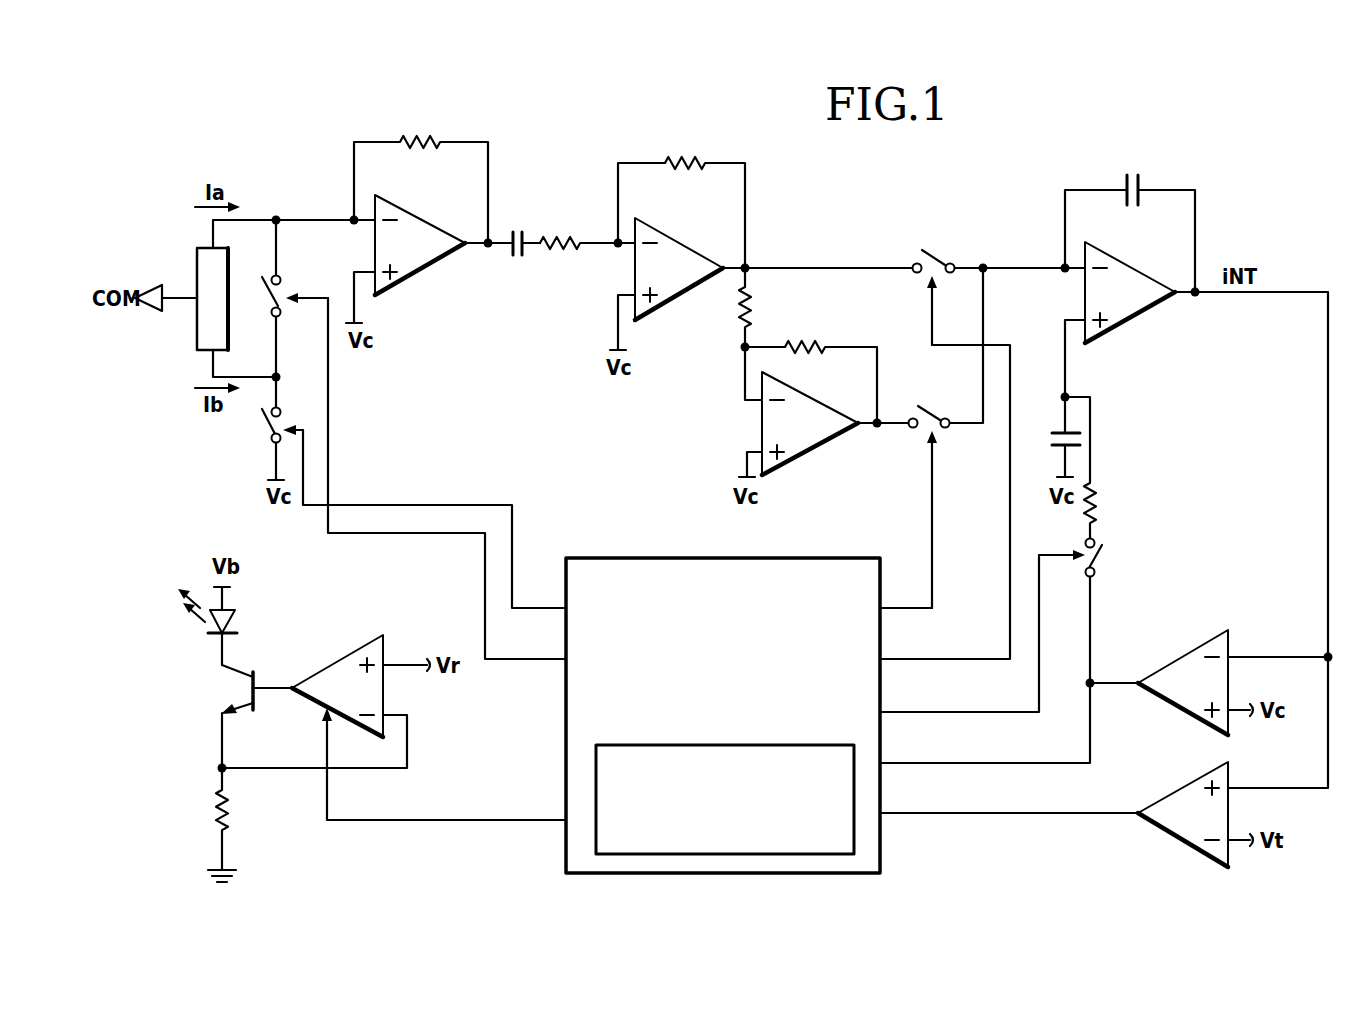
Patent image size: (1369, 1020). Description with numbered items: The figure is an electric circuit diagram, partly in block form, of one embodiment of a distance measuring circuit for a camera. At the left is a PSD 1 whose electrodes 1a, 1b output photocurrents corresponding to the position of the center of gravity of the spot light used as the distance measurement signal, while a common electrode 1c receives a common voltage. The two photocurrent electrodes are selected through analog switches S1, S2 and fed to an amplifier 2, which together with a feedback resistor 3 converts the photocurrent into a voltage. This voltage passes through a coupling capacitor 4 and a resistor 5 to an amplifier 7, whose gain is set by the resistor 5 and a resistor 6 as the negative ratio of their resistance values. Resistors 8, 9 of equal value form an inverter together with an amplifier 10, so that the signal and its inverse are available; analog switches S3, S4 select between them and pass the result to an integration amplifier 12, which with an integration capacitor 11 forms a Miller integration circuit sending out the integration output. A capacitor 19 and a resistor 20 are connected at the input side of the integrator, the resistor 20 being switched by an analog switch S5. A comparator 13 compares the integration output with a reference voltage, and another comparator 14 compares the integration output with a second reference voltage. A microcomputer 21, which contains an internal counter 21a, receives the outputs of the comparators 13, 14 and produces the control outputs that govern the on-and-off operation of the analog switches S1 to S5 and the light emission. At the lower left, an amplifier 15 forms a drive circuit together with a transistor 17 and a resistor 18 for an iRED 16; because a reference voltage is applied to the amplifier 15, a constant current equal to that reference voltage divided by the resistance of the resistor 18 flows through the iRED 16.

The PSD 1 is at (197, 270).
The electrode 1a is at (213, 248).
The electrode 1b is at (213, 352).
The common electrode 1c is at (197, 302).
The amplifier 2 is at (422, 278).
The feedback resistor 3 is at (417, 144).
The coupling capacitor 4 is at (516, 230).
The resistor 5 is at (560, 238).
The resistor 6 is at (688, 165).
The amplifier 7 is at (670, 303).
The resistor 8 is at (752, 318).
The resistor 9 is at (815, 347).
The amplifier 10 is at (826, 445).
The integration capacitor 11 is at (1138, 183).
The integration amplifier 12 is at (1132, 268).
The comparator 13 is at (1176, 792).
The comparator 14 is at (1178, 660).
The amplifier 15 is at (330, 660).
The iRED 16 is at (235, 618).
The transistor 17 is at (226, 690).
The resistor 18 is at (225, 820).
The capacitor 19 is at (1054, 440).
The resistor 20 is at (1098, 500).
The microcomputer 21 is at (705, 874).
The internal counter 21a is at (792, 746).
The analog switch S1 is at (284, 291).
The analog switch S2 is at (268, 426).
The analog switch S3 is at (932, 248).
The analog switch S4 is at (930, 407).
The analog switch S5 is at (1102, 552).